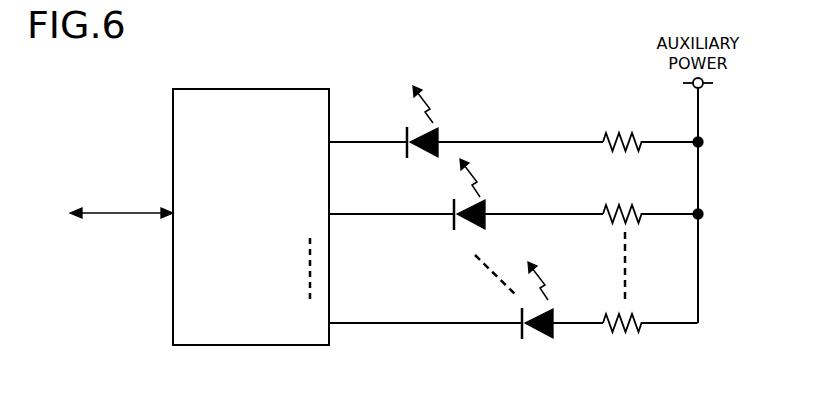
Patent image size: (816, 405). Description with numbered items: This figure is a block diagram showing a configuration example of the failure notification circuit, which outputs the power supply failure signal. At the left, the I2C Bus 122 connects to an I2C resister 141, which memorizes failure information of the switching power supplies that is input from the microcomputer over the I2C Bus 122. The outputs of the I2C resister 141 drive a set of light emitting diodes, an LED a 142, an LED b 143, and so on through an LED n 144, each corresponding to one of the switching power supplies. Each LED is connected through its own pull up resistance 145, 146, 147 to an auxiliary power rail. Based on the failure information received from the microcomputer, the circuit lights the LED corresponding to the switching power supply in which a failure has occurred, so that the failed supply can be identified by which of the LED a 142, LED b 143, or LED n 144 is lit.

The I2C resister 141 is at (173, 113).
The I2C Bus 122 is at (109, 215).
The LED a 142 is at (405, 138).
The LED b 143 is at (452, 210).
The LED n 144 is at (520, 316).
The pull up resistance 145 is at (634, 152).
The pull up resistance 146 is at (634, 224).
The pull up resistance 147 is at (634, 333).